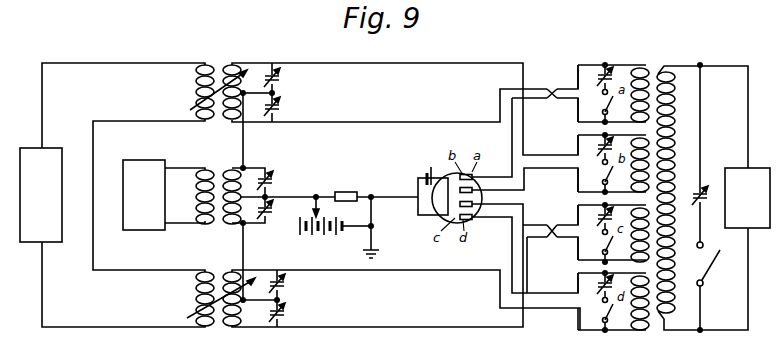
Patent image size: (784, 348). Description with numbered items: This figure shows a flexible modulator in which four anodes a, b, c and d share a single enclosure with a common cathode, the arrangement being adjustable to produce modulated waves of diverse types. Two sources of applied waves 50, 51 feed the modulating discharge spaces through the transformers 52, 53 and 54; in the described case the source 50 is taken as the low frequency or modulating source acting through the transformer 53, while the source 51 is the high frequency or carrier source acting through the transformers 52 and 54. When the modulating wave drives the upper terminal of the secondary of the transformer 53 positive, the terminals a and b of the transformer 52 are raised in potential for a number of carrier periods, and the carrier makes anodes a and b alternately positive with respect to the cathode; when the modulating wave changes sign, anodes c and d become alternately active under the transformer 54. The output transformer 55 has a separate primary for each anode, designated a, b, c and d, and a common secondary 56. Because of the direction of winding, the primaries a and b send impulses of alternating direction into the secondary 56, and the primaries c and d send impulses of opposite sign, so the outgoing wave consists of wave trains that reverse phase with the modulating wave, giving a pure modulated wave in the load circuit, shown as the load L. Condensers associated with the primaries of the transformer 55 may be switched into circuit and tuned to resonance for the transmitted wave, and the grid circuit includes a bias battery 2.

The grid bias battery 2 is at (330, 237).
The source of applied waves 50 is at (144, 195).
The source of applied waves 51 is at (41, 195).
The transformer 52 is at (215, 68).
The transformer 53 is at (222, 168).
The transformer 54 is at (217, 276).
The output transformer 55 is at (652, 78).
The common secondary 56 is at (672, 92).
The load L is at (747, 198).